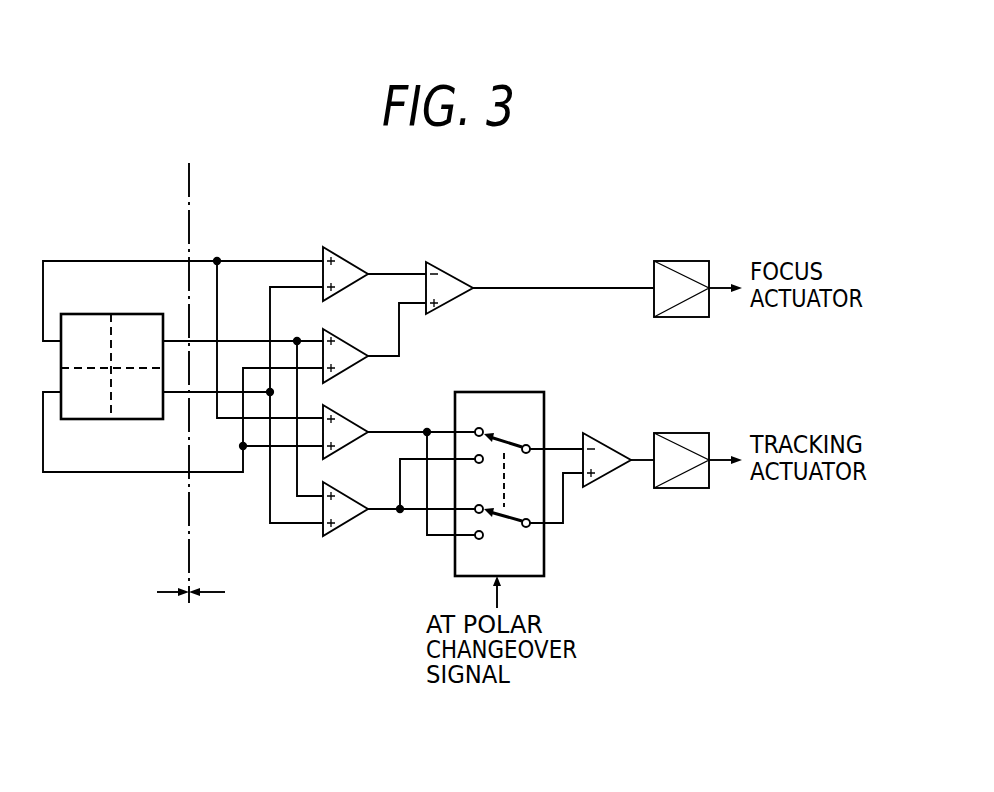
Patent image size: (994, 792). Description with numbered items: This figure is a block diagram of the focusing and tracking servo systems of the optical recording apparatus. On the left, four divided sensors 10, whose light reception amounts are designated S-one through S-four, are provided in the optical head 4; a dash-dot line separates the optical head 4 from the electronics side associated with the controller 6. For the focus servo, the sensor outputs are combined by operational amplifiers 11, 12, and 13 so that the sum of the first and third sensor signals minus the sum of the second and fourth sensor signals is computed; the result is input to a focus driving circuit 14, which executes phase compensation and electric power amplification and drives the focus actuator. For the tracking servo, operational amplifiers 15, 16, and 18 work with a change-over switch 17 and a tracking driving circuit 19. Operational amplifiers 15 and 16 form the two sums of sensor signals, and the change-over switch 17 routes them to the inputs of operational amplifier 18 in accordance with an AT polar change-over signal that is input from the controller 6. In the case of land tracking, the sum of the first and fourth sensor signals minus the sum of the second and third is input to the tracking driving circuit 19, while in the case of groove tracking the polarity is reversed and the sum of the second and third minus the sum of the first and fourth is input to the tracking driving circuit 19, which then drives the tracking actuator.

The optical head 4 is at (163, 594).
The controller 6 is at (216, 594).
The four divided sensors 10 is at (135, 314).
The operational amplifier 11 is at (348, 262).
The operational amplifier 12 is at (458, 278).
The operational amplifier 13 is at (348, 344).
The focus driving circuit 14 is at (675, 261).
The operational amplifier 15 is at (348, 420).
The operational amplifier 16 is at (350, 498).
The change-over switch 17 is at (511, 392).
The operational amplifier 18 is at (605, 446).
The tracking driving circuit 19 is at (680, 433).